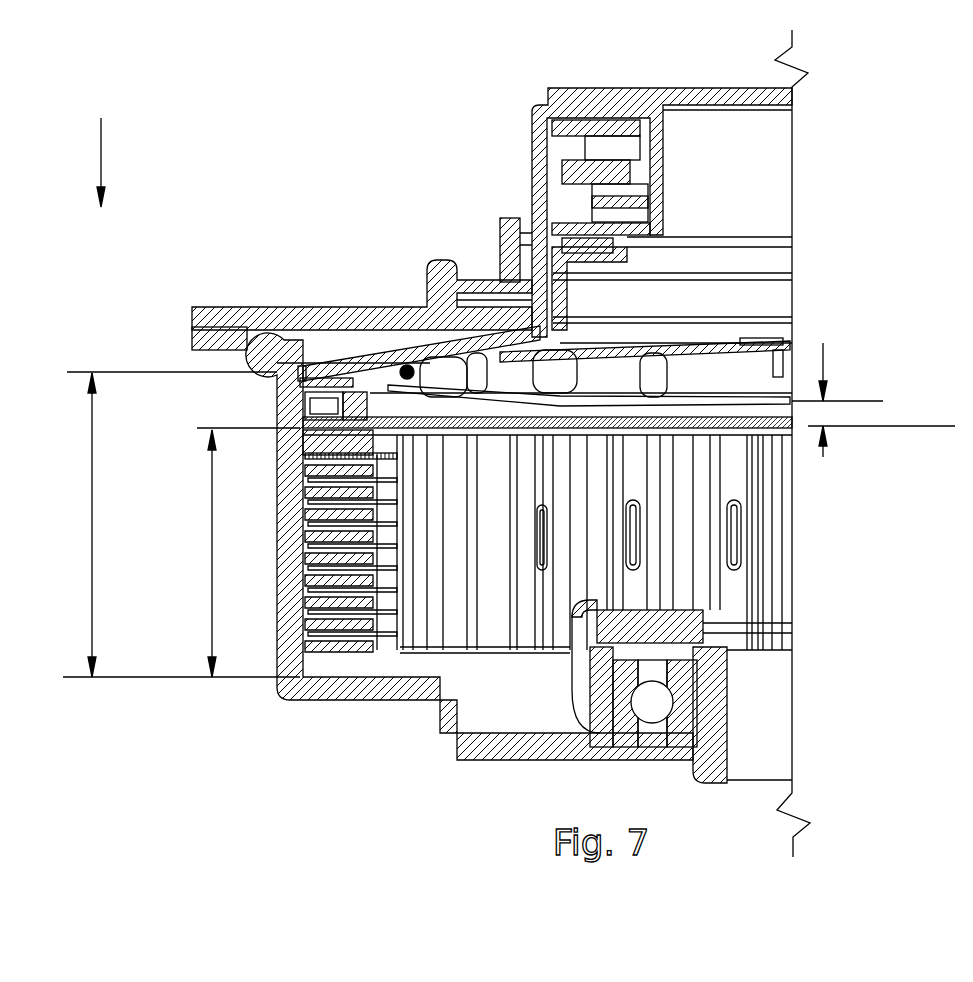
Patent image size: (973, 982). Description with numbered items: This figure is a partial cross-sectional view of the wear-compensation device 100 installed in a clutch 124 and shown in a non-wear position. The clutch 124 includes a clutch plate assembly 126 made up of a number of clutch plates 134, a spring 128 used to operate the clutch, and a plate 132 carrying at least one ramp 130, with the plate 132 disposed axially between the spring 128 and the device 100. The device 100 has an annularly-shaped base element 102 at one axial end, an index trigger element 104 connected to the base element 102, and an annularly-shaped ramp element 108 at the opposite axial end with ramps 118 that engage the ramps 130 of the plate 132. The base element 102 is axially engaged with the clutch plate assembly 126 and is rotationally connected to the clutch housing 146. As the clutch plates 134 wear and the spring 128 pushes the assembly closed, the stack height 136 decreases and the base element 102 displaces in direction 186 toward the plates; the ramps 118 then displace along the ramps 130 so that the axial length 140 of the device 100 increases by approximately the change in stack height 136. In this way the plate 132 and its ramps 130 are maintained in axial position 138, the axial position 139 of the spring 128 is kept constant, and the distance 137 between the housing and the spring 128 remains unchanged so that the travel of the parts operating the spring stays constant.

The clutch 124 is at (505, 88).
The device 100 is at (328, 342).
The ramp element 108 is at (368, 357).
The spring 128 is at (377, 365).
The plate 132 is at (712, 372).
The ramp 130 is at (742, 385).
The index trigger element 104 is at (305, 398).
The ramp 118 is at (785, 415).
The base element 102 is at (757, 440).
The clutch plate assembly 126 is at (316, 669).
The clutch plates 134 is at (360, 655).
The clutch housing 146 is at (443, 752).
The direction 186 is at (101, 150).
The axial position 139 is at (134, 370).
The distance 137 is at (92, 555).
The stack height 136 is at (212, 630).
The axial length 140 is at (825, 355).
The axial position 138 is at (865, 400).